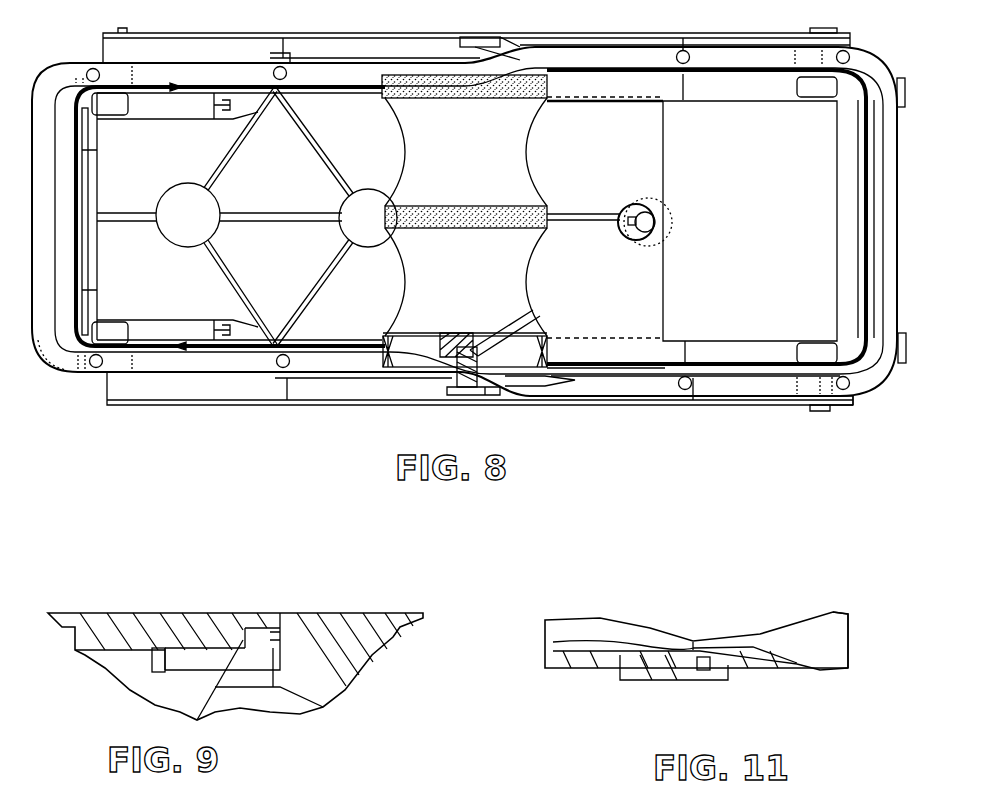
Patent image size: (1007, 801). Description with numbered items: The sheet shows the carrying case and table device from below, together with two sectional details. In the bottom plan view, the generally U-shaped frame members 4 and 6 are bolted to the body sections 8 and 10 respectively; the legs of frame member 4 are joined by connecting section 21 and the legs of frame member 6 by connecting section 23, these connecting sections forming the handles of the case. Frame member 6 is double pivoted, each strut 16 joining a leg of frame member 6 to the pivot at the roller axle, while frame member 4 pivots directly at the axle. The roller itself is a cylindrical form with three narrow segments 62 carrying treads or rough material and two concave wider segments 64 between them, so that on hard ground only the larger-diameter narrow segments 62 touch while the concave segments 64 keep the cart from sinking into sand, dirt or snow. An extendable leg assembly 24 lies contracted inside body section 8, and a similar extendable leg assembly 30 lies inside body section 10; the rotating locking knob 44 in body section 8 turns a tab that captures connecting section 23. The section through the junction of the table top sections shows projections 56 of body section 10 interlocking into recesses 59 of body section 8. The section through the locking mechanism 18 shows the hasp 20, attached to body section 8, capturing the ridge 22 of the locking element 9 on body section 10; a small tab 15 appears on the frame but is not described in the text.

In FIG. 8, the frame member 4 is at (888, 55).
In FIG. 8, the frame member 6 is at (52, 63).
In FIG. 9, the body section 8 is at (367, 613).
In FIG. 11, the body section 8 is at (592, 625).
In FIG. 11, the locking element 9 is at (790, 670).
In FIG. 9, the body section 10 is at (130, 626).
In FIG. 11, the body section 10 is at (850, 630).
In FIG. 8, the latch tab 15 is at (900, 366).
In FIG. 8, the strut 16 is at (355, 60).
In FIG. 11, the locking mechanism 18 is at (633, 683).
In FIG. 11, the hasp 20 is at (577, 668).
In FIG. 8, the connecting section 21 is at (876, 388).
In FIG. 11, the ridge 22 is at (707, 672).
In FIG. 8, the connecting section 23 is at (48, 362).
In FIG. 8, the extendable leg assembly 24 is at (860, 242).
In FIG. 8, the extendable leg assembly 30 is at (84, 281).
In FIG. 8, the rotating locking knob 44 is at (645, 248).
In FIG. 9, the projection 56 is at (295, 624).
In FIG. 9, the recess 59 is at (250, 632).
In FIG. 8, the narrow segment 62 is at (550, 88).
In FIG. 8, the concave wider segment 64 is at (528, 152).